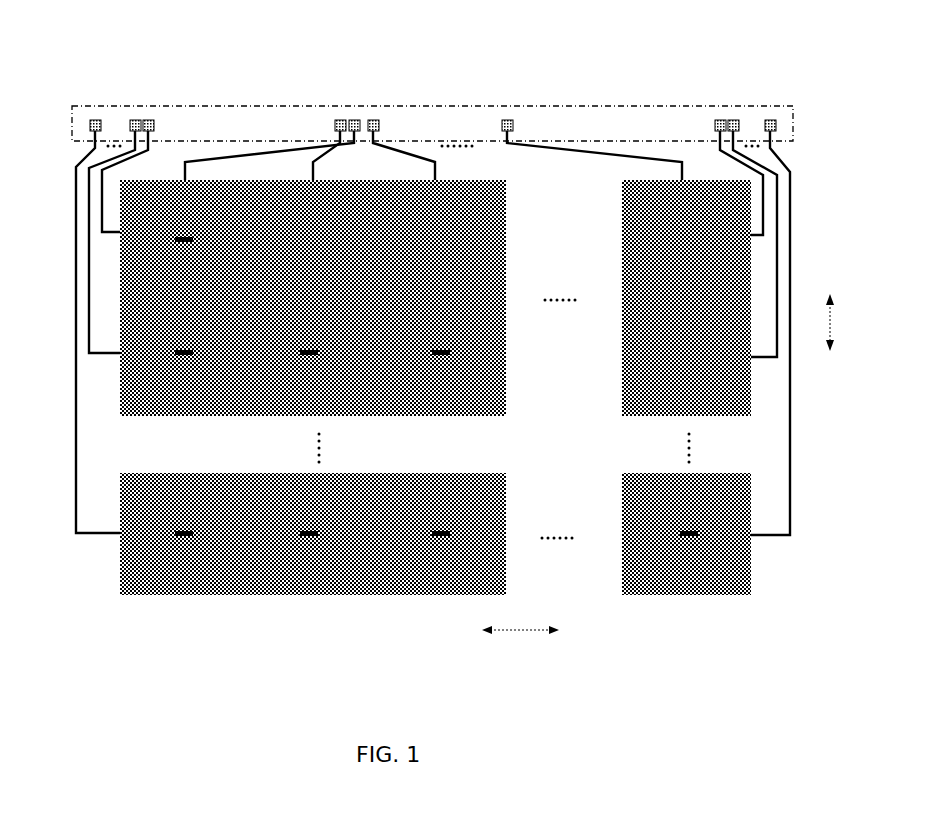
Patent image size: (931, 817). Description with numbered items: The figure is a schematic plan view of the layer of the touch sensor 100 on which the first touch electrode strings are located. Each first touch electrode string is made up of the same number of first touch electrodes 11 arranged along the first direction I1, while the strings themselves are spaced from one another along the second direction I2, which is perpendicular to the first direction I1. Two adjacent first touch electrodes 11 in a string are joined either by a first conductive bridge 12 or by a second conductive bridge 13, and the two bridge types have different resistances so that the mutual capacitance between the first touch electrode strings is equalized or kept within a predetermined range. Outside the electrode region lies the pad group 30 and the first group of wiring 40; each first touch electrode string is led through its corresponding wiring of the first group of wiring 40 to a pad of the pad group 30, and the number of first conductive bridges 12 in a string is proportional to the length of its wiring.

The touch sensor 100 is at (398, 44).
The pad group 30 is at (150, 106).
The first group of wiring 40 is at (89, 326).
The second conductive bridge 13 is at (688, 362).
The first conductive bridge 12 is at (183, 545).
The first touch electrode 11 is at (297, 557).
The first direction I1 is at (520, 645).
The second direction I2 is at (848, 322).